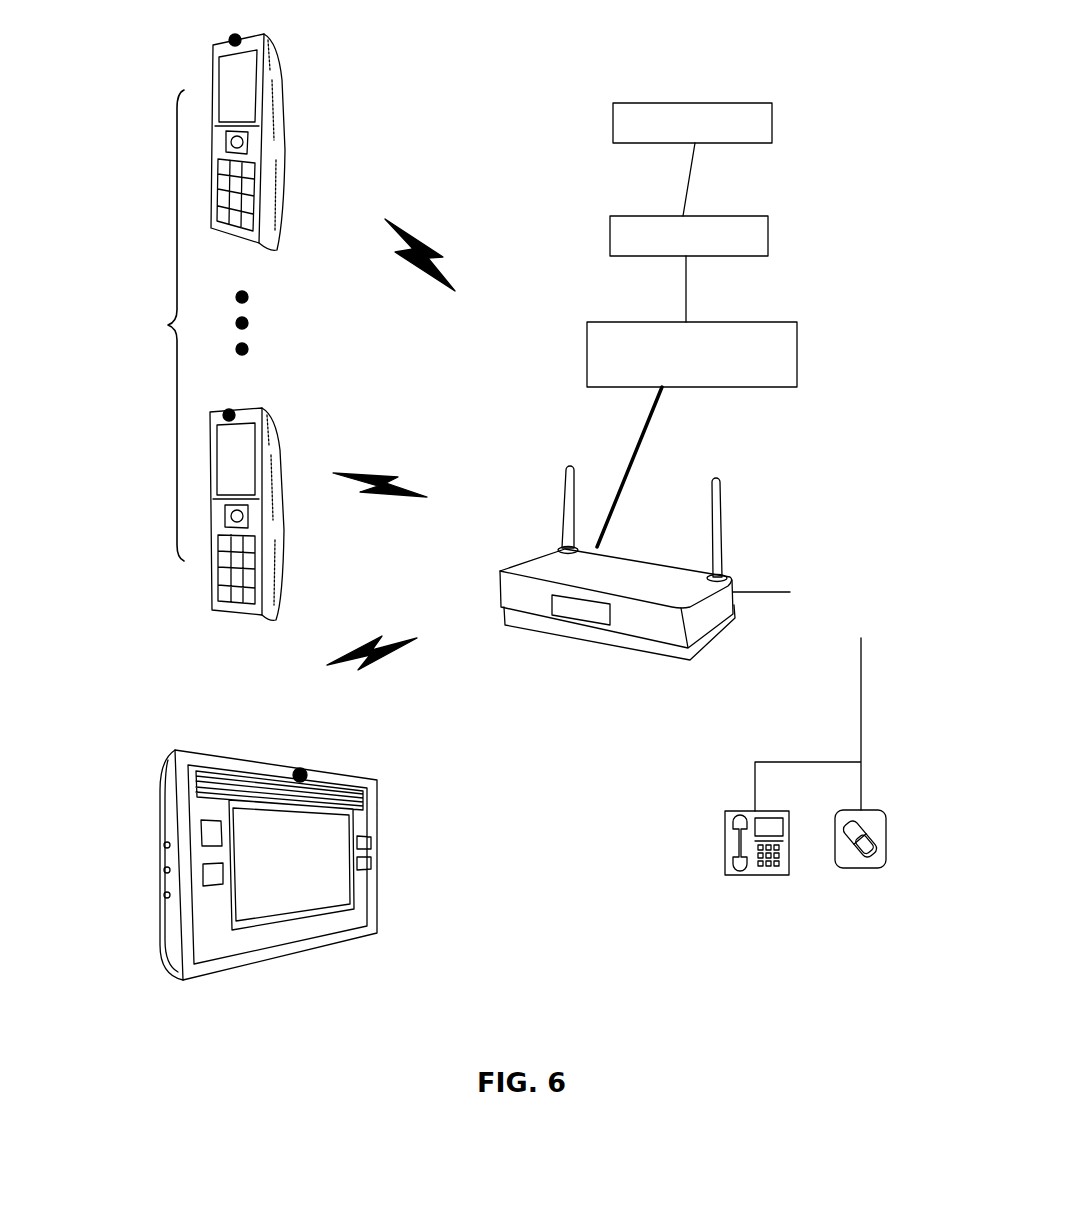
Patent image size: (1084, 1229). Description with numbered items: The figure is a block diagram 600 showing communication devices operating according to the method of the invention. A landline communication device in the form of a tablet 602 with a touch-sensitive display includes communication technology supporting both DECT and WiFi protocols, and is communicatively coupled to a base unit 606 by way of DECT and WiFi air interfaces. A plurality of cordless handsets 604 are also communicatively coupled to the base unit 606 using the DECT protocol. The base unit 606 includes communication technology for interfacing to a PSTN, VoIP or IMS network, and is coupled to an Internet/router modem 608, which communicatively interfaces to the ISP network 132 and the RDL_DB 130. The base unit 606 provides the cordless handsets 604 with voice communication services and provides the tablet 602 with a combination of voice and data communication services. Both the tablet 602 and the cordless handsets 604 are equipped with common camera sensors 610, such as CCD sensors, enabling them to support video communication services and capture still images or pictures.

The block diagram 600 is at (495, 560).
The tablet 602 is at (183, 750).
The cordless handsets 604 is at (272, 435).
The base unit 606 is at (680, 660).
The Internet/router modem 608 is at (692, 354).
The camera sensors 610 is at (231, 412).
The RDL_DB 130 is at (692, 123).
The ISP network 132 is at (689, 236).